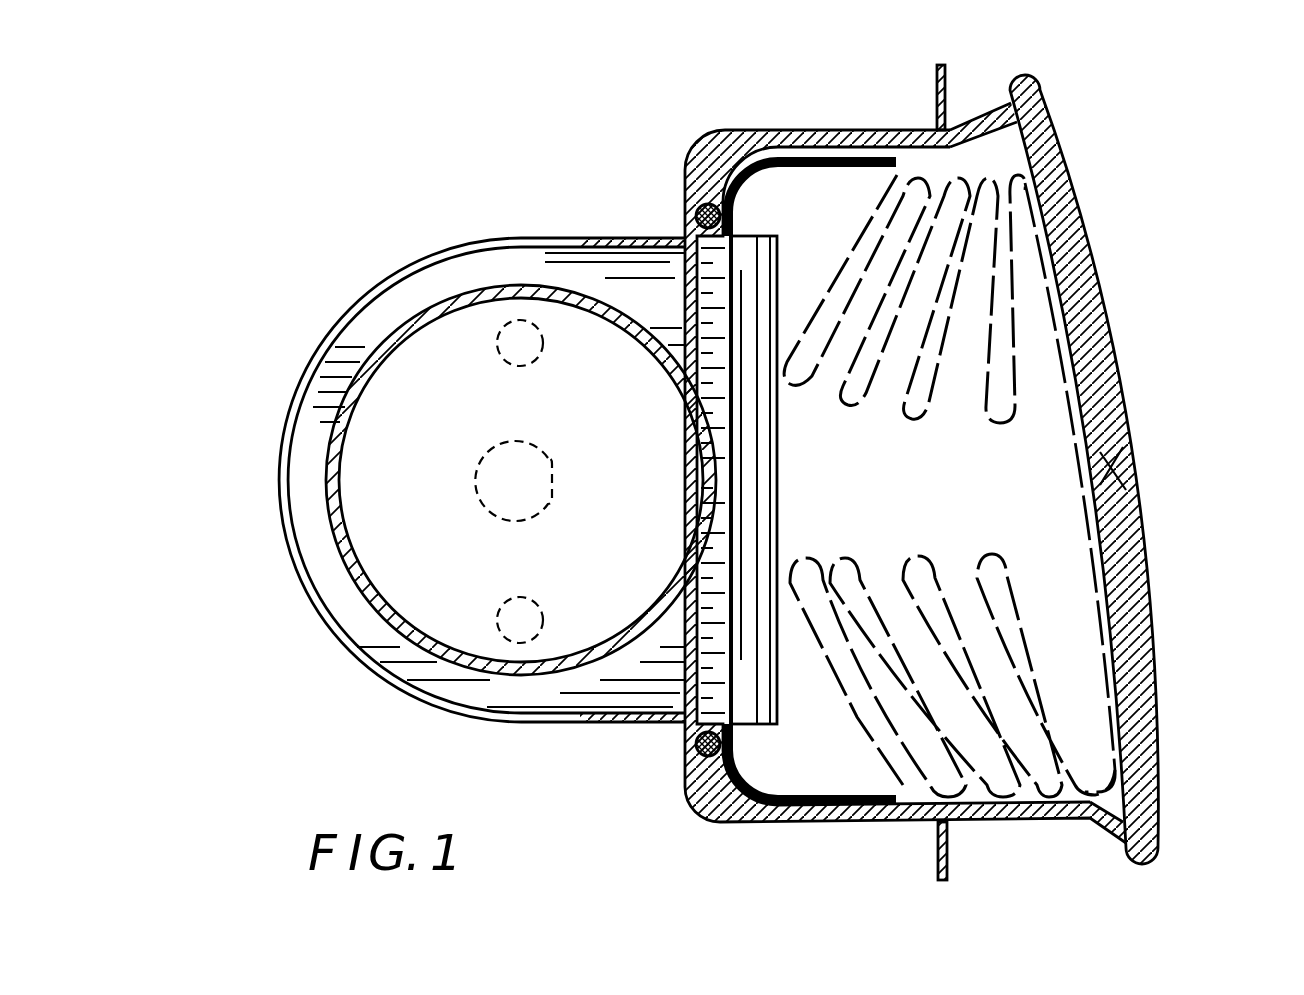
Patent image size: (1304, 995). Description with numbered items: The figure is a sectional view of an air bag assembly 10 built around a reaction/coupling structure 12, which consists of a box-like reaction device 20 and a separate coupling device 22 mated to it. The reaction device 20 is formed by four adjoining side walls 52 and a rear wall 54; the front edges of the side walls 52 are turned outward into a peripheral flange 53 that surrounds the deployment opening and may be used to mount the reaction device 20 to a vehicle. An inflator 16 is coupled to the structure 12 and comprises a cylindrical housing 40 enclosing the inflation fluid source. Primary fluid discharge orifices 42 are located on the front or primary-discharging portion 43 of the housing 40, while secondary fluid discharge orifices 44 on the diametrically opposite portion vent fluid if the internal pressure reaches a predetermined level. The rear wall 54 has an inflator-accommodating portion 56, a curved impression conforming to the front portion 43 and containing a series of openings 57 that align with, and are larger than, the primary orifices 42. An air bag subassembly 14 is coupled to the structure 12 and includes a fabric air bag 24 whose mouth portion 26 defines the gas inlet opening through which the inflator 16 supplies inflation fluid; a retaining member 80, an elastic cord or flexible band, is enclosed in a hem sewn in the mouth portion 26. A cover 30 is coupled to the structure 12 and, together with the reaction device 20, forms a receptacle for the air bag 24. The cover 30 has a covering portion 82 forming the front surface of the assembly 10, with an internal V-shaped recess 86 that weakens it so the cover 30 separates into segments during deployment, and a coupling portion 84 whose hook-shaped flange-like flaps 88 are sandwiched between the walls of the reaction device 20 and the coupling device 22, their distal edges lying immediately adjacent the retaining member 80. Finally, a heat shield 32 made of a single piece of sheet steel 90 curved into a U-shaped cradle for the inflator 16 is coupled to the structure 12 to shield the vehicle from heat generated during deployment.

The air bag assembly 10 is at (308, 236).
The reaction/coupling structure 12 is at (854, 464).
The air bag subassembly 14 is at (1046, 218).
The inflator 16 is at (457, 436).
The reaction device 20 is at (838, 135).
The coupling device 22 is at (748, 180).
The air bag 24 is at (1022, 328).
The mouth portion 26 is at (757, 772).
The cover 30 is at (1018, 469).
The heat shield 32 is at (443, 480).
The cylindrical housing 40 is at (534, 286).
The primary fluid discharge orifices 42 is at (712, 470).
The front or primary-discharging portion 43 is at (700, 510).
The secondary fluid discharge orifices 44 is at (328, 482).
The side walls 52 is at (885, 822).
The peripheral flange 53 is at (936, 95).
The rear wall 54 is at (697, 745).
The inflator-accommodating portion 56 is at (793, 480).
The openings 57 is at (732, 492).
The retaining member 80 is at (695, 777).
The covering portion 82 is at (1125, 566).
The coupling portion 84 is at (958, 132).
The V-shaped recess 86 is at (1118, 455).
The flange-like flaps 88 is at (808, 138).
The sheet steel 90 is at (330, 325).